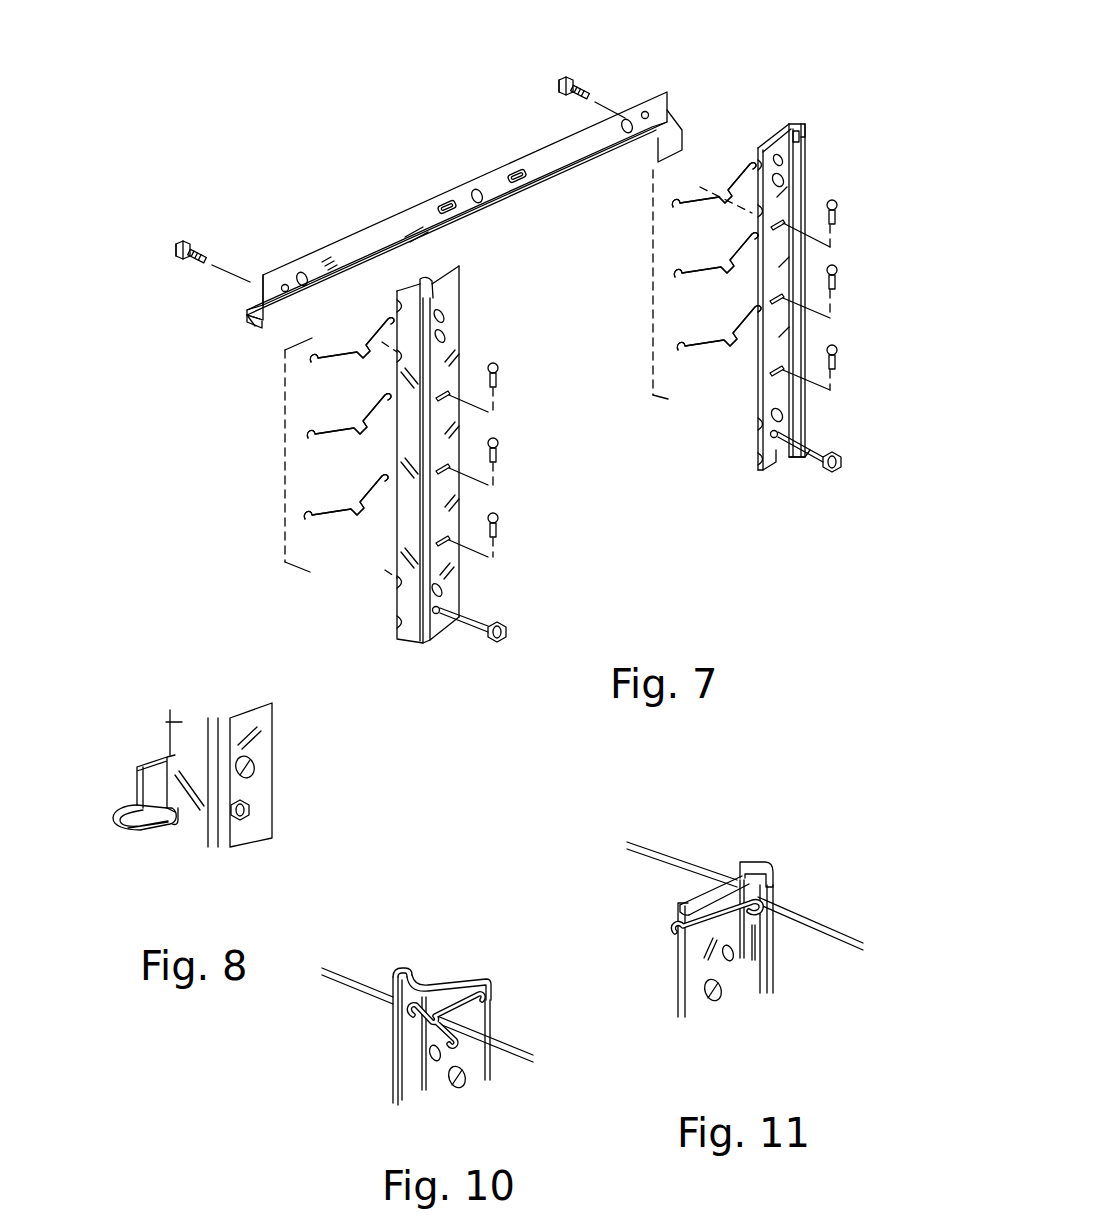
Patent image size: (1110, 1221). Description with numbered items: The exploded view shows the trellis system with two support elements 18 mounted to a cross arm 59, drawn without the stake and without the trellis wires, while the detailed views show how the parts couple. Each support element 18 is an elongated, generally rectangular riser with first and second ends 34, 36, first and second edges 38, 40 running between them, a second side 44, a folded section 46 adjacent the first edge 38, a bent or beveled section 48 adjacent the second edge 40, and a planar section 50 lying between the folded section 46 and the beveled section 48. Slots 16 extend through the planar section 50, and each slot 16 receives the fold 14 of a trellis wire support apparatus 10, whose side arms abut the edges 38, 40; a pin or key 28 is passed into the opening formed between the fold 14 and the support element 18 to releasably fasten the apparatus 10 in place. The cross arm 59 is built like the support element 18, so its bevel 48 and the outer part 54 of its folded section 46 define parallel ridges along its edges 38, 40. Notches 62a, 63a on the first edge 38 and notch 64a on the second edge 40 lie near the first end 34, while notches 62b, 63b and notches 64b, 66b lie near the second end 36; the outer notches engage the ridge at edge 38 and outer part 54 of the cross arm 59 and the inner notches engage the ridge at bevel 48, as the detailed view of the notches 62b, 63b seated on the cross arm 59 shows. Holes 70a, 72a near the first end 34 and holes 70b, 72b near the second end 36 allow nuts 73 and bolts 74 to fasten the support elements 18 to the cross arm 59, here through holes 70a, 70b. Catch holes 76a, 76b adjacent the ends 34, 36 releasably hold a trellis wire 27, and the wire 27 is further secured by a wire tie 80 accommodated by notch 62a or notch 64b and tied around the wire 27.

In FIG. 7, the trellis wire support apparatus 10 is at (313, 362).
In FIG. 7, the fold 14 is at (368, 352).
In FIG. 7, the slot 16 is at (440, 388).
In FIG. 7, the support element 18 is at (450, 292).
In FIG. 10, the trellis wire 27 is at (345, 970).
In FIG. 11, the trellis wire 27 is at (815, 917).
In FIG. 7, the pin 28 is at (496, 364).
In FIG. 7, the first end 34 is at (258, 290).
In FIG. 8, the first end 34 is at (135, 790).
In FIG. 10, the first end 34 is at (440, 978).
In FIG. 7, the second end 36 is at (410, 644).
In FIG. 11, the second end 36 is at (700, 890).
In FIG. 7, the first edge 38 is at (278, 320).
In FIG. 8, the first edge 38 is at (167, 755).
In FIG. 7, the second edge 40 is at (313, 250).
In FIG. 11, the second edge 40 is at (671, 907).
In FIG. 7, the second side 44 is at (567, 177).
In FIG. 7, the folded section 46 is at (256, 305).
In FIG. 8, the folded section 46 is at (128, 812).
In FIG. 10, the folded section 46 is at (390, 1035).
In FIG. 11, the folded section 46 is at (775, 960).
In FIG. 7, the angled section 48 is at (667, 90).
In FIG. 8, the angled section 48 is at (160, 765).
In FIG. 10, the angled section 48 is at (495, 1025).
In FIG. 11, the angled section 48 is at (675, 970).
In FIG. 7, the planar section 50 is at (392, 232).
In FIG. 8, the outer part 54 is at (168, 752).
In FIG. 10, the outer part 54 is at (398, 1055).
In FIG. 7, the cross arm 59 is at (500, 200).
In FIG. 7, the notch 62a is at (398, 304).
In FIG. 11, the notch 62a is at (631, 895).
In FIG. 7, the notch 62b is at (392, 620).
In FIG. 8, the notch 62b is at (170, 830).
In FIG. 7, the notch 63a is at (394, 350).
In FIG. 7, the notch 63b is at (394, 582).
In FIG. 8, the notch 63b is at (160, 760).
In FIG. 7, the notch 64a is at (760, 465).
In FIG. 7, the notch 64b is at (758, 156).
In FIG. 7, the notch 66b is at (754, 205).
In FIG. 7, the hole 70a is at (648, 114).
In FIG. 10, the hole 70a is at (432, 1075).
In FIG. 7, the hole 70b is at (286, 284).
In FIG. 11, the hole 70b is at (735, 965).
In FIG. 10, the hole 72a is at (465, 1088).
In FIG. 8, the hole 72b is at (255, 770).
In FIG. 11, the hole 72b is at (720, 1005).
In FIG. 7, the nut 73 is at (505, 625).
In FIG. 8, the nut 73 is at (255, 805).
In FIG. 7, the bolt 74 is at (562, 80).
In FIG. 8, the bolt 74 is at (252, 815).
In FIG. 7, the catch hole 76a is at (797, 430).
In FIG. 10, the catch hole 76a is at (412, 970).
In FIG. 7, the catch hole 76b is at (262, 313).
In FIG. 11, the catch hole 76b is at (760, 868).
In FIG. 10, the wire tie 80 is at (465, 980).
In FIG. 11, the wire tie 80 is at (690, 905).